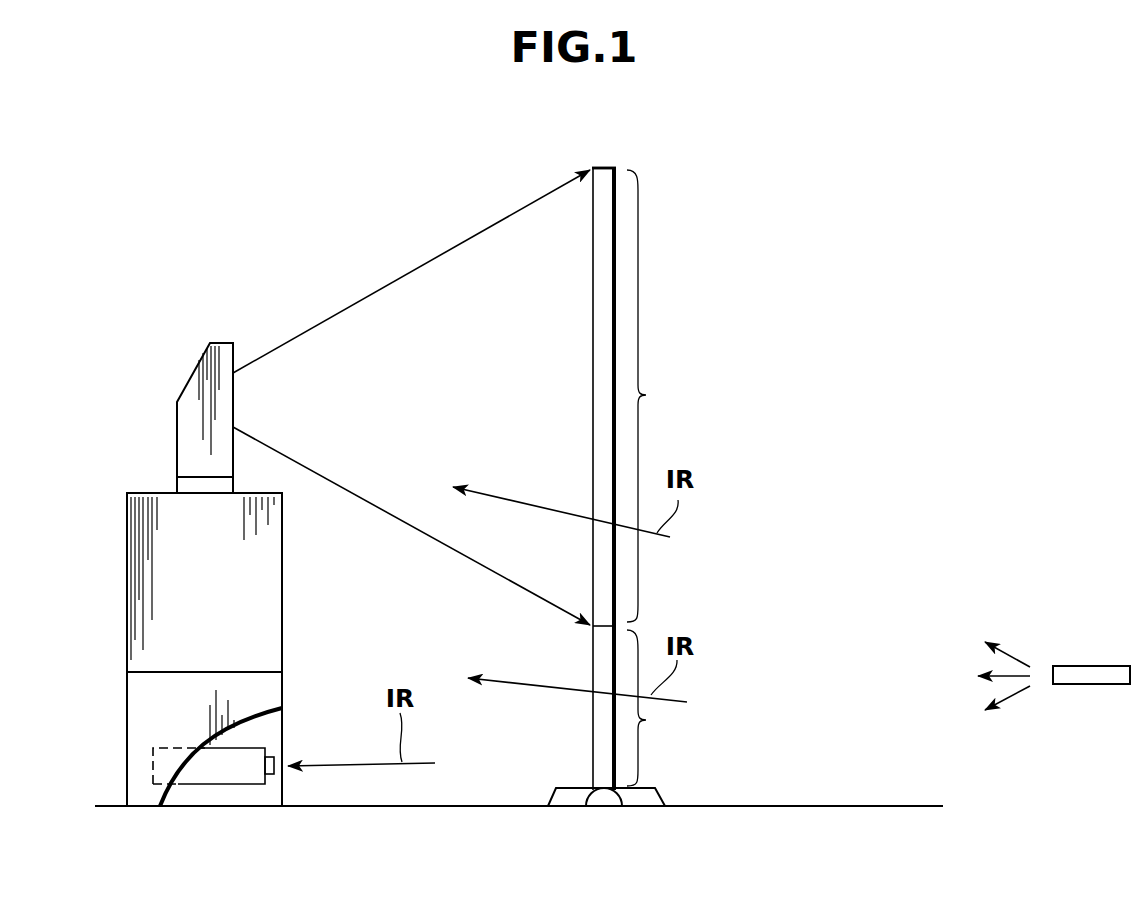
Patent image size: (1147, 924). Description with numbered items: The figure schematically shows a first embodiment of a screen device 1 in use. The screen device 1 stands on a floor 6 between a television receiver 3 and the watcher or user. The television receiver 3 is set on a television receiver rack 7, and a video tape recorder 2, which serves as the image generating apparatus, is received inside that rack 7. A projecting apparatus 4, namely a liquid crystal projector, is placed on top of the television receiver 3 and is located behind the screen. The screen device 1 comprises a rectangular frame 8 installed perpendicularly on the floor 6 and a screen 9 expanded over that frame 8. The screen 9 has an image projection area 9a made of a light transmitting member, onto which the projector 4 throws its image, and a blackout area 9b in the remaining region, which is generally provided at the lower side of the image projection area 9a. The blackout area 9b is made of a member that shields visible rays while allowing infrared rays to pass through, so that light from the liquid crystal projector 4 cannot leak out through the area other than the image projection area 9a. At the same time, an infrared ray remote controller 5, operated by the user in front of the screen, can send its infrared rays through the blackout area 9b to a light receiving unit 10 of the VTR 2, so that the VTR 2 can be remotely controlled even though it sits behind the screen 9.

The screen device 1 is at (611, 166).
The video tape recorder 2 is at (245, 748).
The television receiver 3 is at (126, 555).
The projecting apparatus 4 is at (190, 373).
The infrared ray remote controller 5 is at (1086, 666).
The floor 6 is at (810, 805).
The television receiver rack 7 is at (126, 715).
The rectangular frame 8 is at (601, 176).
The screen 9 is at (620, 447).
The image projection area 9a is at (641, 398).
The blackout area 9b is at (658, 708).
The light receiving unit 10 is at (276, 760).